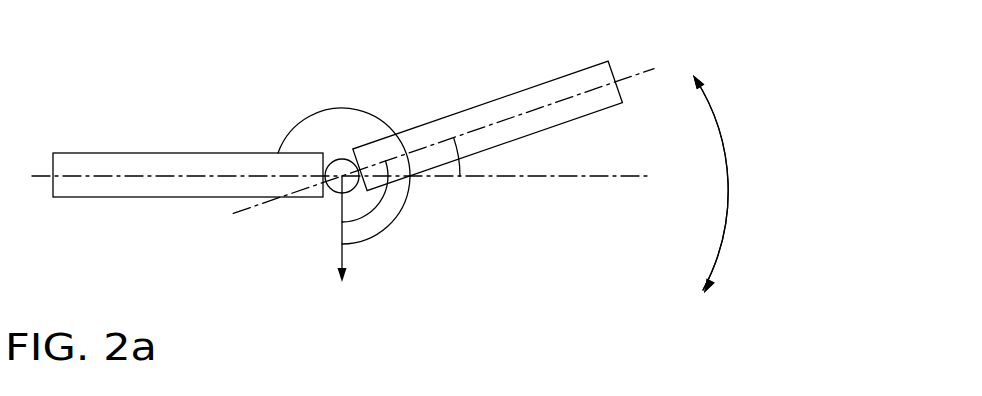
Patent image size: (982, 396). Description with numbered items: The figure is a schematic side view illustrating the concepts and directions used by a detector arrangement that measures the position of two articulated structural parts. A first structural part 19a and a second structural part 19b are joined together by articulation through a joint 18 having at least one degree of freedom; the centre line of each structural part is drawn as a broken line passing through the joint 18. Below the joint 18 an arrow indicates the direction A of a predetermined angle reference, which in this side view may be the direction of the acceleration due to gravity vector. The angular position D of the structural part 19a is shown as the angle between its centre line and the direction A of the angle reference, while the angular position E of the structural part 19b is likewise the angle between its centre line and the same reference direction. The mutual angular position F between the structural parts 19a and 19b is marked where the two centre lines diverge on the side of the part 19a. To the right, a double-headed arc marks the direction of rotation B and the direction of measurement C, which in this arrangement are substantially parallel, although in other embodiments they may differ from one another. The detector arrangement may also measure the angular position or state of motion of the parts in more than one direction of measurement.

The joint 18 is at (276, 175).
The structural part 19a is at (511, 110).
The structural part 19b is at (70, 167).
The direction of angle reference A is at (359, 229).
The direction of rotation B is at (728, 184).
The direction of measurement C is at (750, 184).
The angular position D is at (368, 214).
The angular position E is at (352, 110).
The mutual angular position F is at (462, 173).